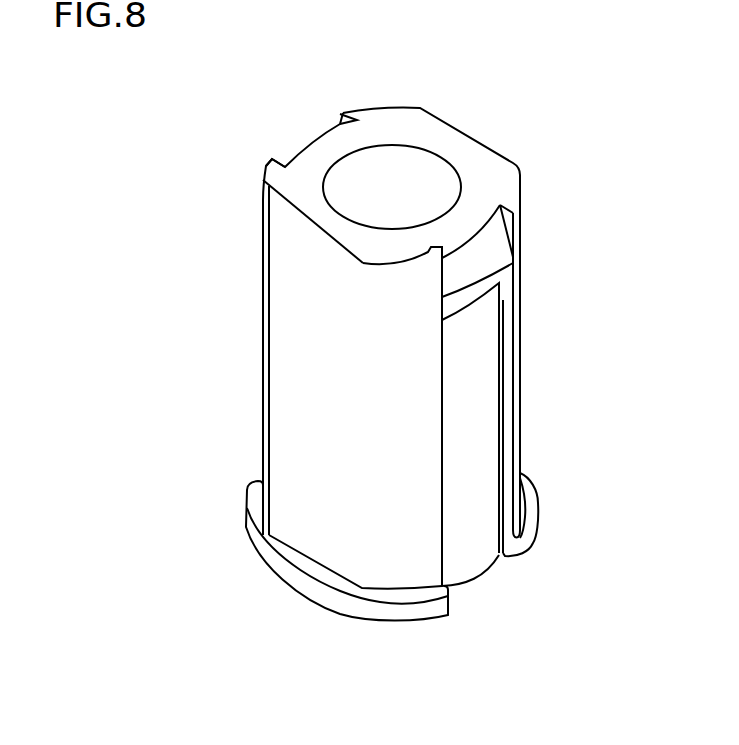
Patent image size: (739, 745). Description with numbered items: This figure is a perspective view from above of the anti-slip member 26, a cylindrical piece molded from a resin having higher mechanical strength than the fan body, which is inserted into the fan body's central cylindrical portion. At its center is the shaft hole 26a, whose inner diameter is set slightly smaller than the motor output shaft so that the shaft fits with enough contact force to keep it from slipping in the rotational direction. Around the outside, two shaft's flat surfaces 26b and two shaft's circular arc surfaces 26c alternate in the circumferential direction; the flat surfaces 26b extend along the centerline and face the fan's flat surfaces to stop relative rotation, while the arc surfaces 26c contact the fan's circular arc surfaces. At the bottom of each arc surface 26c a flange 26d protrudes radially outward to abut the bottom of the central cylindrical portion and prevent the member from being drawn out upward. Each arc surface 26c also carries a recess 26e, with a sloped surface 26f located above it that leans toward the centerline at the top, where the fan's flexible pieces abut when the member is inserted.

The anti-slip member 26 is at (379, 106).
The shaft hole 26a is at (431, 159).
The shaft's flat surface 26b is at (483, 142).
The shaft's circular arc surface 26c is at (523, 230).
The flange 26d is at (538, 503).
The recess 26e is at (478, 365).
The sloped surface 26f is at (315, 134).